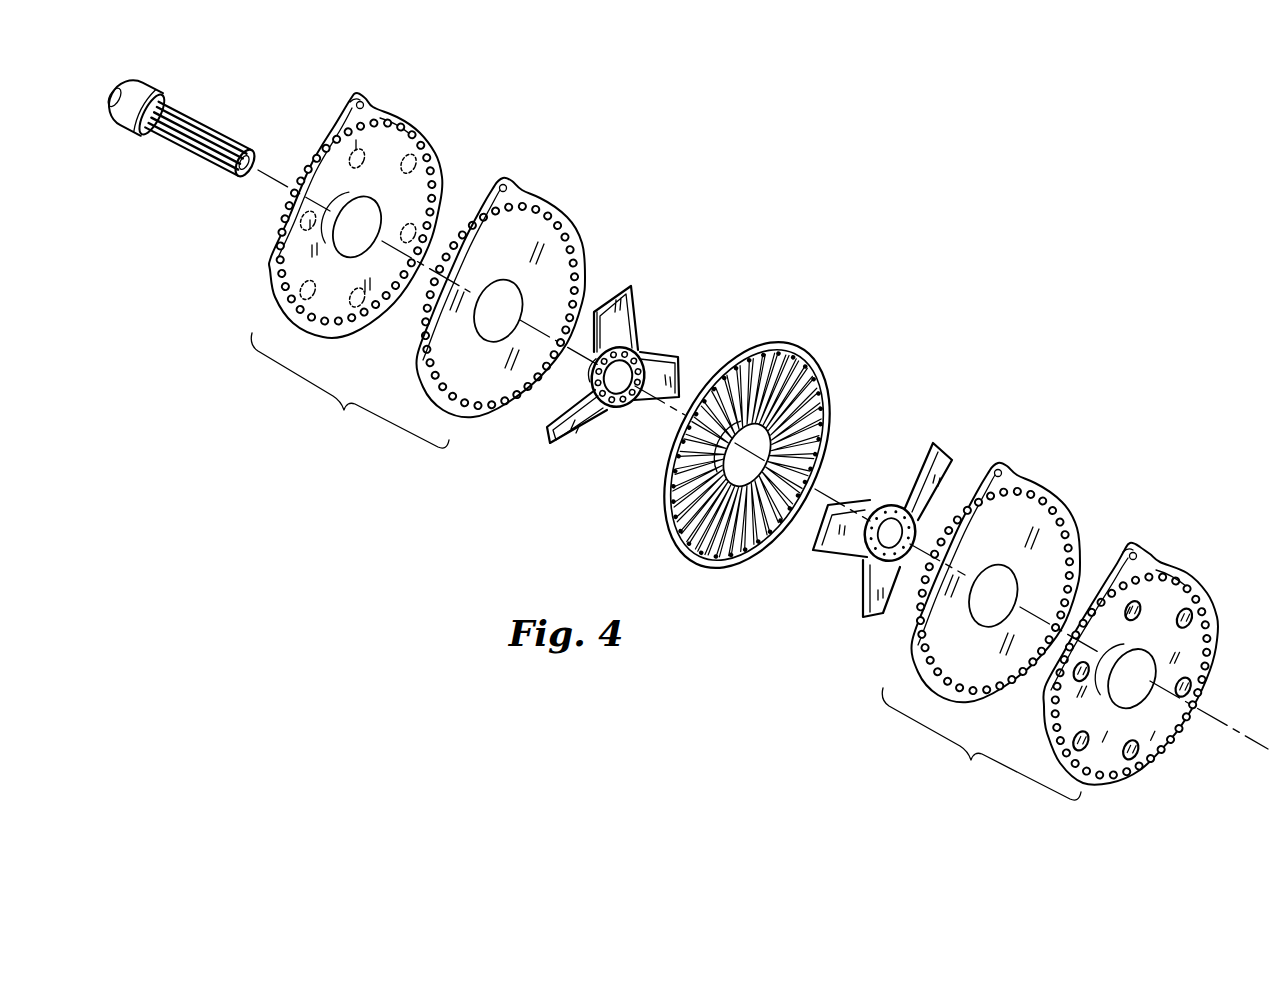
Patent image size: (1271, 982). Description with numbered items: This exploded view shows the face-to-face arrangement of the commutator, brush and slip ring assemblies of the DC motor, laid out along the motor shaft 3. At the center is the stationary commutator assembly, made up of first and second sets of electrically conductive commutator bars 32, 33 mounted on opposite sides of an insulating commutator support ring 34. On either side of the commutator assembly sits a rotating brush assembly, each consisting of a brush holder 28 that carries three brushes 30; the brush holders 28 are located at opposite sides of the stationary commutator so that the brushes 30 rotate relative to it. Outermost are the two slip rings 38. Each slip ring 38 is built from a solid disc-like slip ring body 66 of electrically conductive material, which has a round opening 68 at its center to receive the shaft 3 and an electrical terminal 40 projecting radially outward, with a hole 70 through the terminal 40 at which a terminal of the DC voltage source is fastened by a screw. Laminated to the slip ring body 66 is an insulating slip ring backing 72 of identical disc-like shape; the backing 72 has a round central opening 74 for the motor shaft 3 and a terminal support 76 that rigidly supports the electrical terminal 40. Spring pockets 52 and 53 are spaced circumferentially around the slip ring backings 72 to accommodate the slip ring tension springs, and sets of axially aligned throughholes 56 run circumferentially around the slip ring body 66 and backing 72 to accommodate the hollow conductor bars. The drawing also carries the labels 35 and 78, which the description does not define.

The motor shaft 3 is at (184, 144).
The brush holder 28 is at (644, 354).
The brush 30 is at (640, 312).
The first set of commutator bars 32 is at (662, 488).
The second set of commutator bars 33 is at (752, 550).
The commutator support ring 34 is at (764, 350).
The rim pin 35 is at (820, 372).
The slip ring 38 is at (744, 446).
The electrical terminal 40 is at (528, 196).
The spring pocket 52 is at (340, 136).
The spring pocket 53 is at (1195, 682).
The throughhole 56 is at (313, 176).
The slip ring body 66 is at (565, 236).
The round opening 68 is at (510, 298).
The hole 70 is at (507, 178).
The slip ring backing 72 is at (412, 132).
The round central opening 74 is at (432, 160).
The terminal support 76 is at (388, 110).
The mounting lobe 78 is at (362, 92).